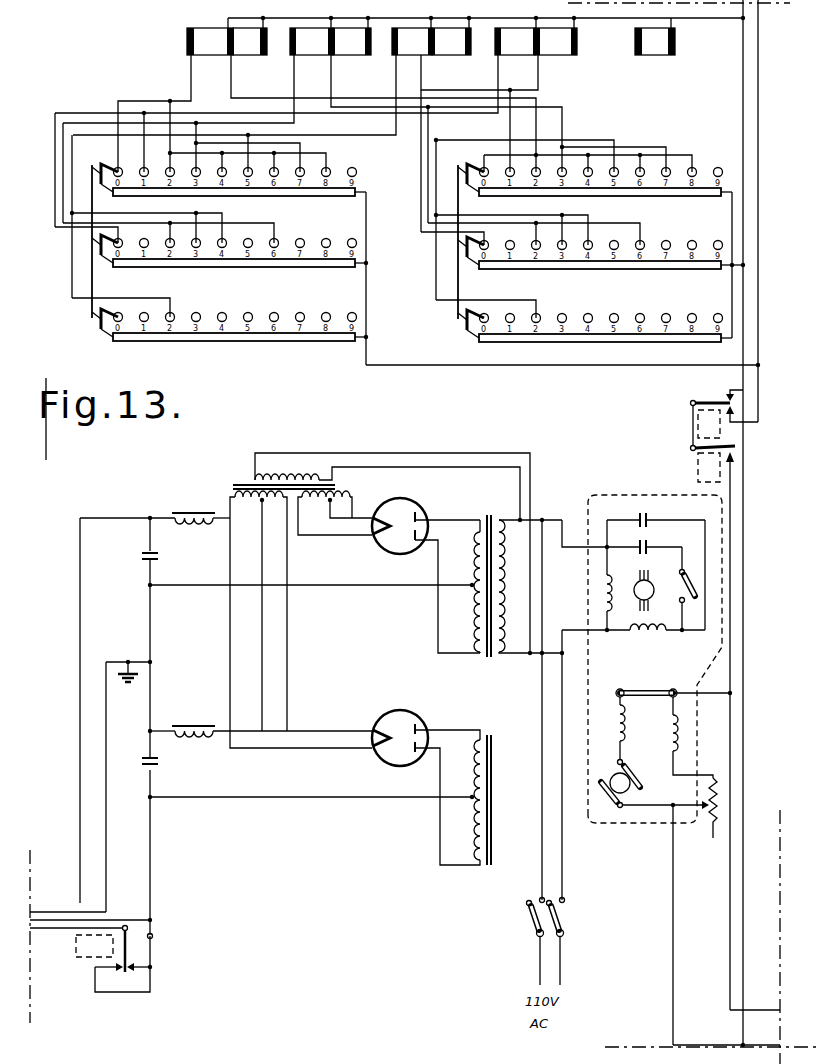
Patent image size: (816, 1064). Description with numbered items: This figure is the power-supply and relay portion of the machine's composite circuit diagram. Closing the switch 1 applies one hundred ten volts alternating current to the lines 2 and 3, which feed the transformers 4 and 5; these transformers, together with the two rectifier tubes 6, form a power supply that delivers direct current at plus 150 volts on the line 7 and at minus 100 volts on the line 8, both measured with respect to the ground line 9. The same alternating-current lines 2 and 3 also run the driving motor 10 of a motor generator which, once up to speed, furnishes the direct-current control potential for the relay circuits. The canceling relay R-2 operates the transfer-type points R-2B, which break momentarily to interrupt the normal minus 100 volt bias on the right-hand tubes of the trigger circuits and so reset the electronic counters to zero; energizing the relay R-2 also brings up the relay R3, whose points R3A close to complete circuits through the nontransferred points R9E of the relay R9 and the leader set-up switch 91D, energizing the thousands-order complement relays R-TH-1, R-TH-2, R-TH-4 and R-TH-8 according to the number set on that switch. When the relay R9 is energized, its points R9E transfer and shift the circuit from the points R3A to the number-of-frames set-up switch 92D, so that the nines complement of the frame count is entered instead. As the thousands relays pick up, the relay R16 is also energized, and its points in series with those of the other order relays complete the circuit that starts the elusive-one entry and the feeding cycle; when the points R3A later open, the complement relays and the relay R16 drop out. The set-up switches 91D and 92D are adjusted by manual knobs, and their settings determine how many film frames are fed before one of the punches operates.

The thousands complement relay R-TH-1 is at (218, 55).
The thousands complement relay R-TH-2 is at (321, 55).
The thousands complement relay R-TH-4 is at (420, 55).
The thousands complement relay R-TH-8 is at (550, 55).
The relay R16 is at (657, 55).
The number-of-frames set-up switch 92D is at (97, 272).
The leader set-up switch 91D is at (462, 278).
The relay points R9E is at (710, 398).
The relay R9 is at (698, 428).
The relay points R3A is at (694, 451).
The relay R3 is at (698, 477).
The driving motor 10 is at (625, 495).
The transformer 5 is at (331, 486).
The rectifier tubes 6 is at (408, 507).
The transformer 4 is at (492, 517).
The plus 150 volt line 7 is at (80, 732).
The ground line 9 is at (106, 808).
The minus 100 volt line 8 is at (150, 848).
The +150 volt supply terminal 150 is at (78, 903).
The -100 volt supply terminal 100 is at (152, 932).
The canceling relay R-2 is at (92, 958).
The relay points R2B R-2B is at (125, 955).
The switch 1 is at (564, 920).
The A. C. line 2 is at (540, 878).
The A. C. line 3 is at (561, 876).